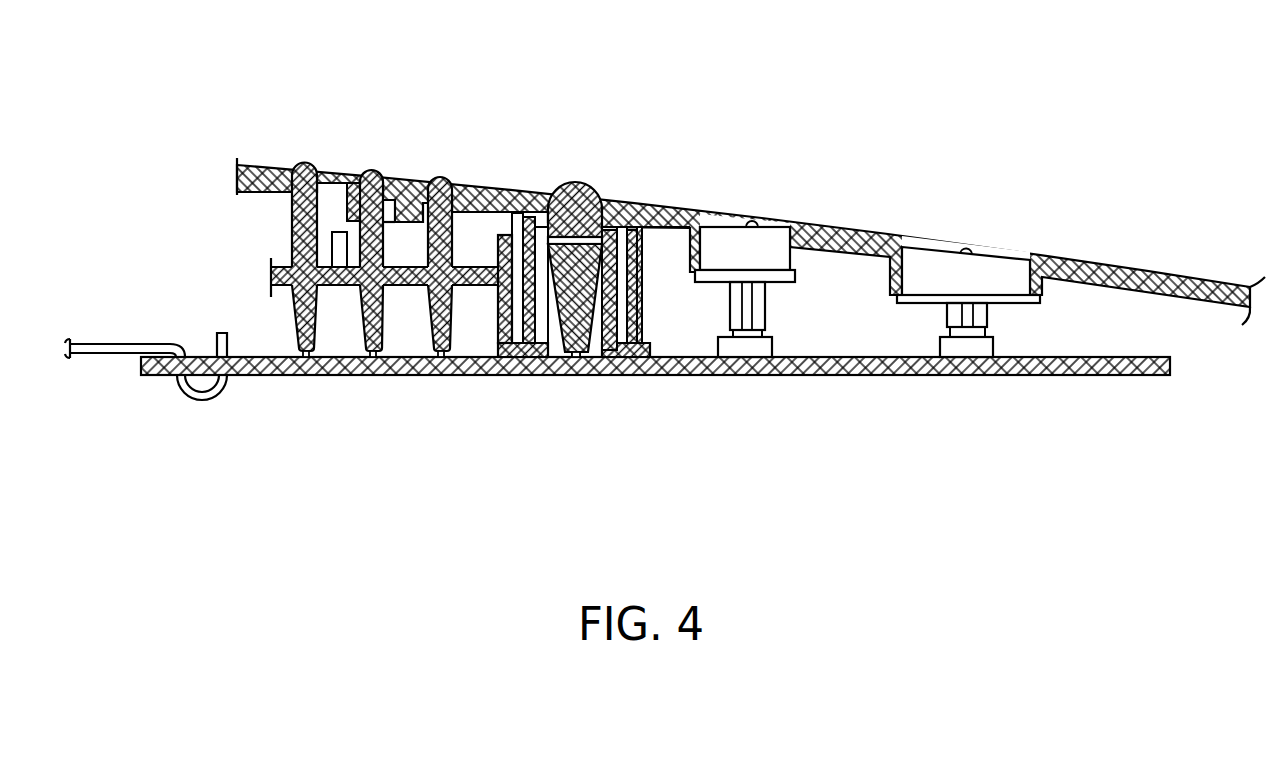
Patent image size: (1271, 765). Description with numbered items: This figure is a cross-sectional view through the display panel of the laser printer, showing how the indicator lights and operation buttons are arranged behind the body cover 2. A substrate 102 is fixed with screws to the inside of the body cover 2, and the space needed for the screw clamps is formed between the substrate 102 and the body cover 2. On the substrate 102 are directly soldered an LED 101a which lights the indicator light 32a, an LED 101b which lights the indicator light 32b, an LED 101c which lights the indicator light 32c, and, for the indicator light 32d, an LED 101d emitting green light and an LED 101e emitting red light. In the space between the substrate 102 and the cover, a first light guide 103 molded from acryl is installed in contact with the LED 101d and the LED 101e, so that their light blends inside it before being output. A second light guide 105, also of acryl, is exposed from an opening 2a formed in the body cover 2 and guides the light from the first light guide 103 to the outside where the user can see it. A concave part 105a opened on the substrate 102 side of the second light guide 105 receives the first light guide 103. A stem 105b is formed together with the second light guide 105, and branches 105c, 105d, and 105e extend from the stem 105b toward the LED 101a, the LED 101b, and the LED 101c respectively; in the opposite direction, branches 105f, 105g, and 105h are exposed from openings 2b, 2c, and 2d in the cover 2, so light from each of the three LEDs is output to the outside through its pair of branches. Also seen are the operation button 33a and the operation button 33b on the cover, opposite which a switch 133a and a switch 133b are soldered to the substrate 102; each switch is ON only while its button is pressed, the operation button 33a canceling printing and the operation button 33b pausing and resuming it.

The body cover 2 is at (843, 240).
The opening 2a is at (610, 190).
The opening 2b is at (288, 168).
The opening 2c is at (388, 168).
The opening 2d is at (458, 178).
The indicator light 32a is at (300, 156).
The indicator light 32b is at (373, 158).
The indicator light 32c is at (445, 166).
The indicator light 32d is at (574, 175).
The operation button 33a is at (761, 240).
The operation button 33b is at (980, 268).
The LED 101a is at (306, 355).
The LED 101b is at (373, 357).
The LED 101c is at (441, 357).
The LED 101d is at (577, 357).
The LED 101e is at (588, 441).
The substrate 102 is at (1070, 363).
The first light guide 103 is at (580, 273).
The second light guide 105 is at (579, 193).
The concave part 105a is at (603, 323).
The stem 105b is at (500, 352).
The branch 105c is at (300, 310).
The branch 105d is at (368, 328).
The branch 105e is at (438, 332).
The branch 105f is at (306, 218).
The branch 105g is at (352, 220).
The branch 105h is at (466, 238).
The switch 133a is at (752, 348).
The switch 133b is at (968, 348).